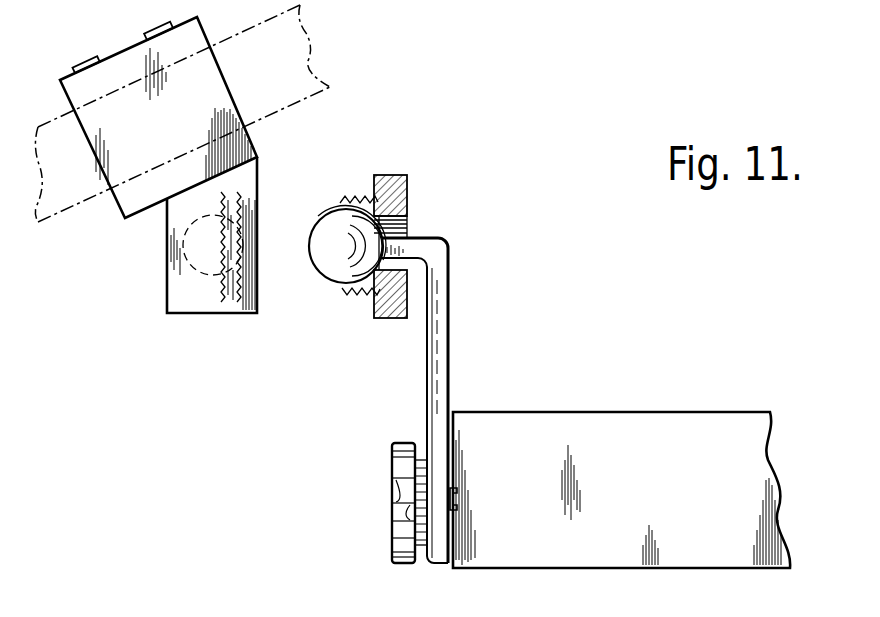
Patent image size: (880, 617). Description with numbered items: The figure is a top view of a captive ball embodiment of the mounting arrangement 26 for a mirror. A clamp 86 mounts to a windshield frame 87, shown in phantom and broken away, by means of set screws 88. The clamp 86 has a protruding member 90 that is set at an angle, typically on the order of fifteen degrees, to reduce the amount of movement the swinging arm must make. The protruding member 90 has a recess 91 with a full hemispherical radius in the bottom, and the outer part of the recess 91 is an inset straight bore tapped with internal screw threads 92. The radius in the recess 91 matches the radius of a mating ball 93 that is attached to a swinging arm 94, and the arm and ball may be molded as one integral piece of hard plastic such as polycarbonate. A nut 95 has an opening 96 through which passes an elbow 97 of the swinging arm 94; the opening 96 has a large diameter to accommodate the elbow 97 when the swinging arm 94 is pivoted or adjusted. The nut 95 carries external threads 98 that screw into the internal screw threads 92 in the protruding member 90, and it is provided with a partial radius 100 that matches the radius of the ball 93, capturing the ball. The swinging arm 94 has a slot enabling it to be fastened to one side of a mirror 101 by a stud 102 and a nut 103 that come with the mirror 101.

The mounting arrangement 26 is at (346, 110).
The clamp 86 is at (200, 43).
The windshield frame 87 is at (312, 92).
The set screws 88 is at (98, 60).
The protruding member 90 is at (210, 317).
The recess 91 is at (183, 248).
The internal screw threads 92 is at (254, 197).
The ball 93 is at (315, 252).
The swinging arm 94 is at (452, 264).
The nut 95 is at (407, 194).
The opening 96 is at (408, 225).
The elbow 97 is at (443, 238).
The external threads 98 is at (350, 298).
The partial radius 100 is at (325, 213).
The mirror 101 is at (482, 420).
The stud 102 is at (457, 492).
The nut 103 is at (393, 447).